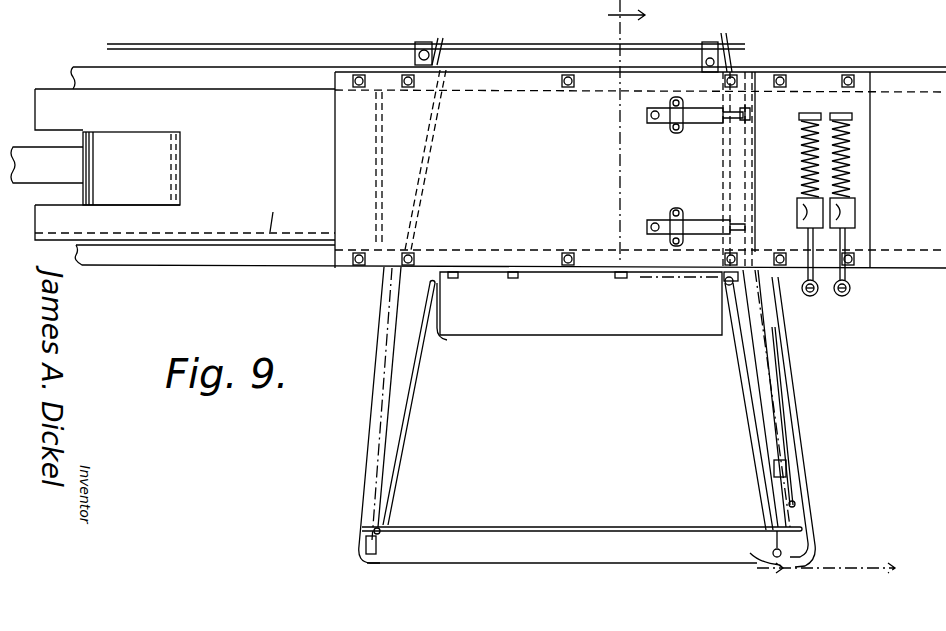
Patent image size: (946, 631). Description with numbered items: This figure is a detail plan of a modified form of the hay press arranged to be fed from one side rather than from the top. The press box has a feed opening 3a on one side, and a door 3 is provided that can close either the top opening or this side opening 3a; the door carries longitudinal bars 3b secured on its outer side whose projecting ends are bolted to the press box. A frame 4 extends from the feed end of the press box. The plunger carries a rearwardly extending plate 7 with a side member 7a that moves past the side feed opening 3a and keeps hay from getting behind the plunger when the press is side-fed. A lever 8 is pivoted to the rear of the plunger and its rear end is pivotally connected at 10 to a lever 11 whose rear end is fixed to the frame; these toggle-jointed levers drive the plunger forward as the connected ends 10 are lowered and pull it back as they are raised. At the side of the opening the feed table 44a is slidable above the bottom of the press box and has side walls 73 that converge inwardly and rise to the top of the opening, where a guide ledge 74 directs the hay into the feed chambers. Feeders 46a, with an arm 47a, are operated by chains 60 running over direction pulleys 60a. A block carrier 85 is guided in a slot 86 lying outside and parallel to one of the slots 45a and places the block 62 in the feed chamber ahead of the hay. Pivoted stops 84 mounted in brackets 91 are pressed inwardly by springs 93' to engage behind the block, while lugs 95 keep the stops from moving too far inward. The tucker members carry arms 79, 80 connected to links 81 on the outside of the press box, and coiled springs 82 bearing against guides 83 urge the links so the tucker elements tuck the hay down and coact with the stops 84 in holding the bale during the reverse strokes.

The door 3 is at (640, 170).
The feed opening 3a is at (452, 320).
The bars 3b is at (477, 83).
The frame 4 is at (220, 258).
The plate 7 is at (490, 153).
The side member 7a is at (266, 212).
The lever 8 is at (95, 168).
The pivotally connected ends 10 is at (695, 286).
The lever 11 is at (840, 570).
The feed table 44a is at (556, 425).
The slots 45a is at (410, 387).
The feeders 46a is at (446, 38).
The arm of the feeder 47a is at (632, 527).
The chains 60 is at (330, 45).
The direction pulleys 60a is at (418, 44).
The block 62 is at (755, 113).
The walls 73 is at (373, 373).
The guide ledge 74 is at (587, 320).
The arm 79 is at (818, 277).
The arm 80 is at (850, 281).
The links 81 is at (813, 248).
The coiled springs 82 is at (832, 175).
The guides 83 is at (850, 227).
The stops 84 is at (735, 118).
The block carrier 85 is at (787, 468).
The slot 86 is at (758, 307).
The brackets 91 is at (670, 132).
The springs 93' is at (473, 115).
The lugs 95 is at (735, 155).